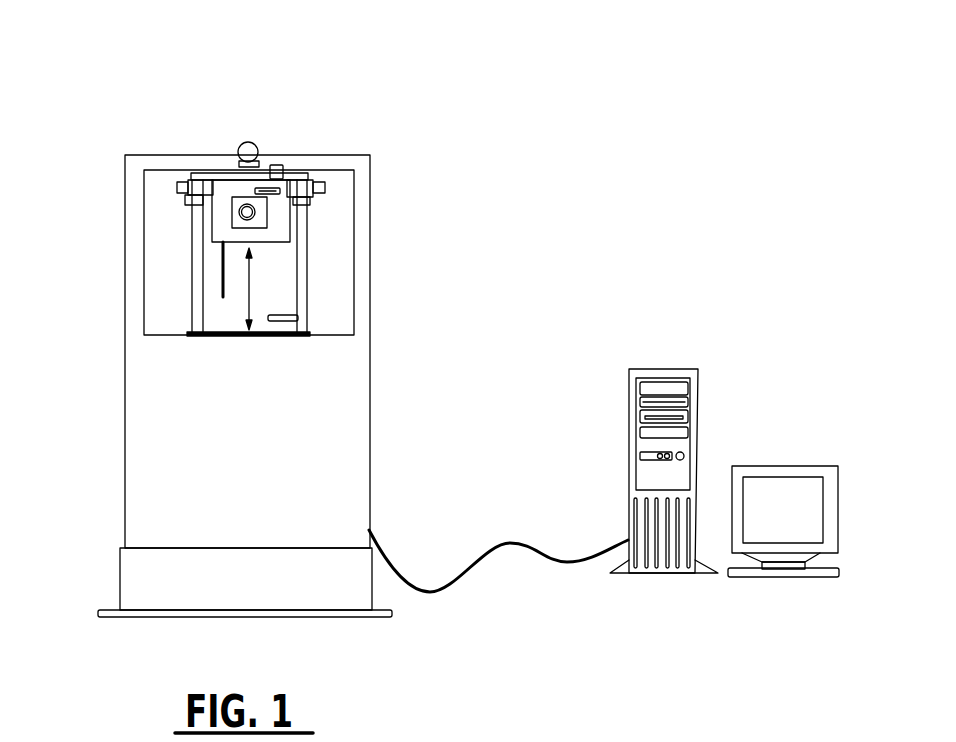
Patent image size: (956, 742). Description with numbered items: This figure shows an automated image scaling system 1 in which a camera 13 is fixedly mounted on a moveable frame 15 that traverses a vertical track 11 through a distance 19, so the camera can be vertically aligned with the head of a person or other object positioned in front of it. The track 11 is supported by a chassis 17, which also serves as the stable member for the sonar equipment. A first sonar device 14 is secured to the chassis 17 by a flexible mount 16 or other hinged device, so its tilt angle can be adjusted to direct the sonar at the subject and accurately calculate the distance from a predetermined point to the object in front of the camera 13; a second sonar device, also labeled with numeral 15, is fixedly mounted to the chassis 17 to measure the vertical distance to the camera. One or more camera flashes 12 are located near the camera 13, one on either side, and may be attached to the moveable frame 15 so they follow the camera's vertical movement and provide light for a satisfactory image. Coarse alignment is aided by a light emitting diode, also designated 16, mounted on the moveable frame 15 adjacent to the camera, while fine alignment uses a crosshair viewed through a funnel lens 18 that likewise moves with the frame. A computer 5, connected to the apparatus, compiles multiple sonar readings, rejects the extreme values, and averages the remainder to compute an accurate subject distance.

The automated image scaling system 1 is at (570, 173).
The computer 5 is at (675, 369).
The track 11 is at (308, 263).
The camera flashes 12 is at (186, 197).
The camera 13 is at (247, 212).
The first sonar device 14 is at (252, 142).
The moveable frame 15 is at (277, 187).
The flexible mount 16 is at (237, 161).
The chassis 17 is at (369, 497).
The funnel lens 18 is at (283, 165).
The distance 19 is at (252, 288).